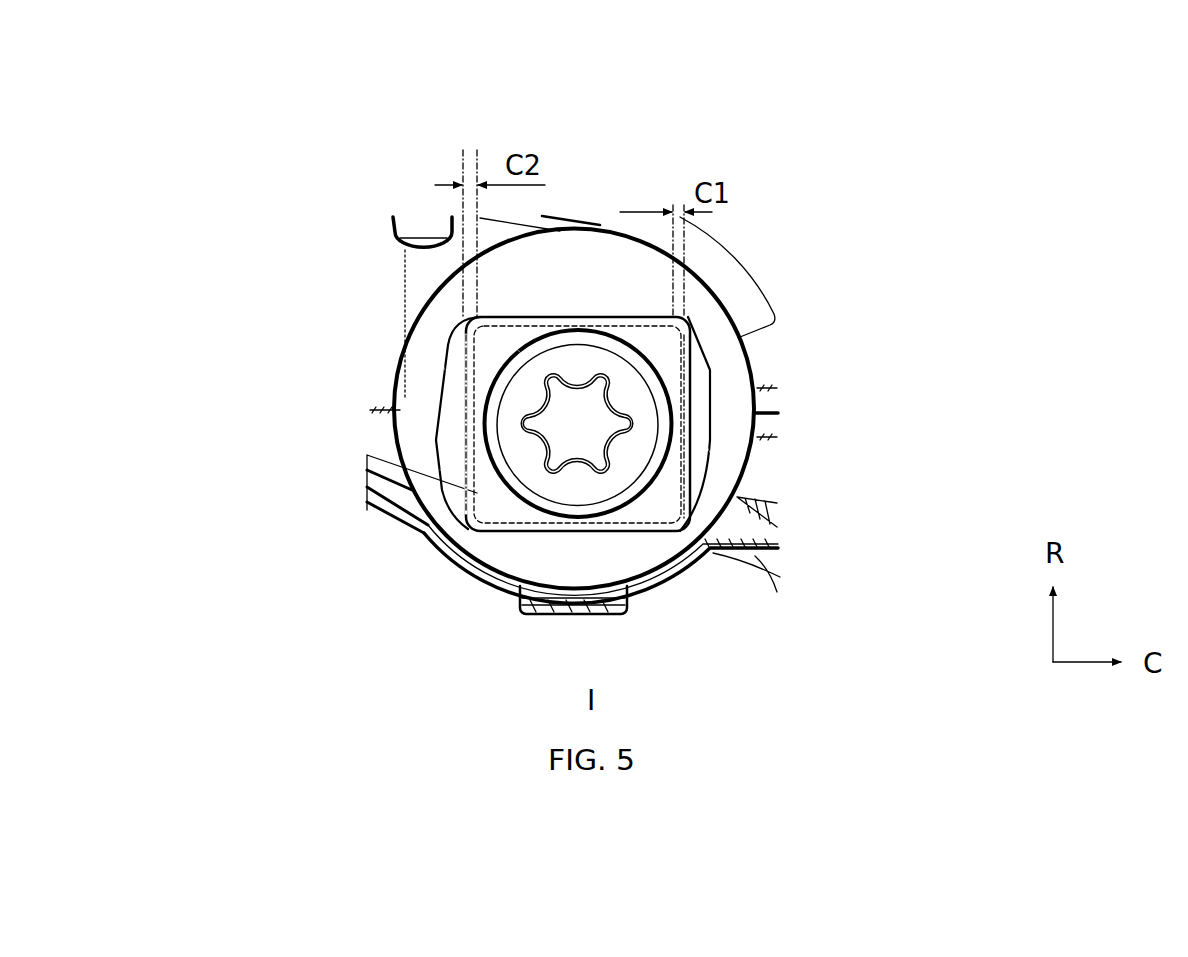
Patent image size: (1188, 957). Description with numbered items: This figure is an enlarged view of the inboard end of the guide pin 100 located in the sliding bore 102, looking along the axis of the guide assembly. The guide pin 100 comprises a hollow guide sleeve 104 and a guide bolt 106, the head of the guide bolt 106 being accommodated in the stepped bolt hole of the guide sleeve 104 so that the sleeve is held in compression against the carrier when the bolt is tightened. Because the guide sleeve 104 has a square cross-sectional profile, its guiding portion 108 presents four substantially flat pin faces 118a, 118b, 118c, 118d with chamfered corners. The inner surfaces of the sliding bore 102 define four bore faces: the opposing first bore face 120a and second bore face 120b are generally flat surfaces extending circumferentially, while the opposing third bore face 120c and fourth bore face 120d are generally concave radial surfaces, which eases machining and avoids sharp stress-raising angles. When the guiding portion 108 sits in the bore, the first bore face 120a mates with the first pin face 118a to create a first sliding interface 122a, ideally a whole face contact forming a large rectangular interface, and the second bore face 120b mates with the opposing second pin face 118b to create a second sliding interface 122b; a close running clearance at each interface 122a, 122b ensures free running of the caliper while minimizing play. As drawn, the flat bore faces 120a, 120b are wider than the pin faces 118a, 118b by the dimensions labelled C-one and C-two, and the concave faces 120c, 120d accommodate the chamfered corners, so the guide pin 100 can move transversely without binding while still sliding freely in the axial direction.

The guide pin 100 is at (612, 537).
The sliding bore 102 is at (707, 423).
The guide sleeve 104 is at (467, 423).
The guide bolt 106 is at (442, 525).
The guiding portion 108 is at (627, 317).
The first pin face 118a is at (665, 313).
The second pin face 118b is at (655, 557).
The third pin face 118c is at (467, 484).
The fourth pin face 118d is at (700, 518).
The first bore face 120a is at (510, 343).
The second bore face 120b is at (577, 494).
The third bore face 120c is at (443, 355).
The fourth bore face 120d is at (713, 452).
The first sliding interface 122a is at (560, 298).
The second sliding interface 122b is at (633, 548).